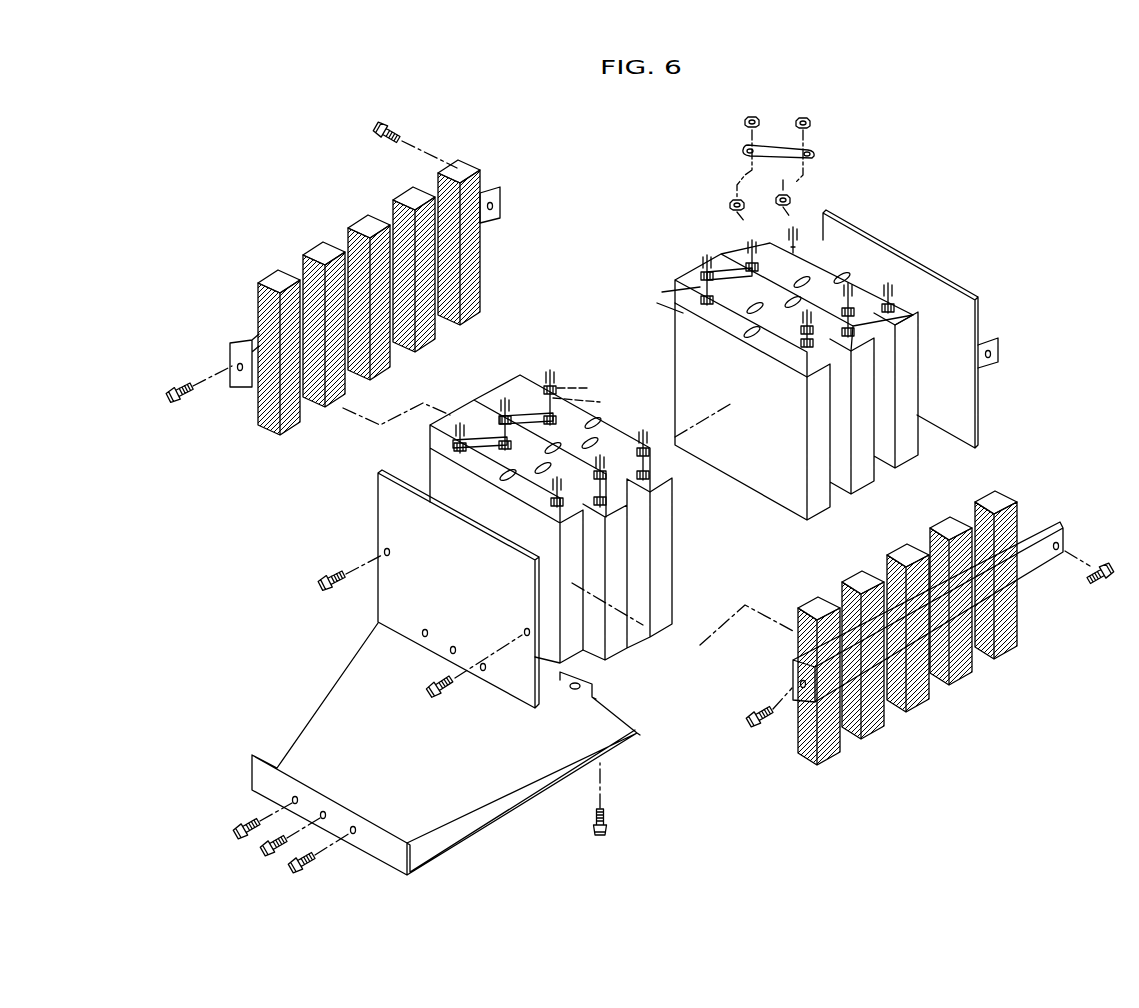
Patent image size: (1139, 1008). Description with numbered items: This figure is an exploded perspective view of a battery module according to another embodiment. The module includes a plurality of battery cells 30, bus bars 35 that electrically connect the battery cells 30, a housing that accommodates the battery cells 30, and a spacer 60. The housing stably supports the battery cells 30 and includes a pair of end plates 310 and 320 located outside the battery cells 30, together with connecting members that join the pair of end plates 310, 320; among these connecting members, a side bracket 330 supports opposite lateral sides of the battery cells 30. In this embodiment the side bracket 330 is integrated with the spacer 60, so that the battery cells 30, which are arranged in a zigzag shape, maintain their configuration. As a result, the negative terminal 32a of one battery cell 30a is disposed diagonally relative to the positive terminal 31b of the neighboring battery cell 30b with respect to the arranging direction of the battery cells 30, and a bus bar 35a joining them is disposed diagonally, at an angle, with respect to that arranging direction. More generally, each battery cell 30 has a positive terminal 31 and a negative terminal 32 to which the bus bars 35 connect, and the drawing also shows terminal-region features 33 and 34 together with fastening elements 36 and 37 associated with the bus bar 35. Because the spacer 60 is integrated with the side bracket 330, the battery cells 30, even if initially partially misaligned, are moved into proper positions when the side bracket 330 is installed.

The battery cell 30 is at (922, 374).
The battery cell 30a is at (550, 633).
The neighboring battery cell 30b is at (618, 642).
The positive terminal 31 is at (800, 238).
The positive terminal 31b is at (492, 420).
The negative terminal 32 is at (891, 292).
The negative terminal 32a is at (452, 434).
The terminal slot 33 is at (843, 282).
The terminal cover plate 34 is at (825, 268).
The bus bar 35 is at (815, 153).
The bus bar 35a is at (478, 447).
The nut 36 is at (810, 123).
The nut 37 is at (790, 201).
The spacer 60 is at (873, 713).
The end plate 310 is at (376, 600).
The end plate 320 is at (983, 319).
The side bracket 330 is at (1021, 580).